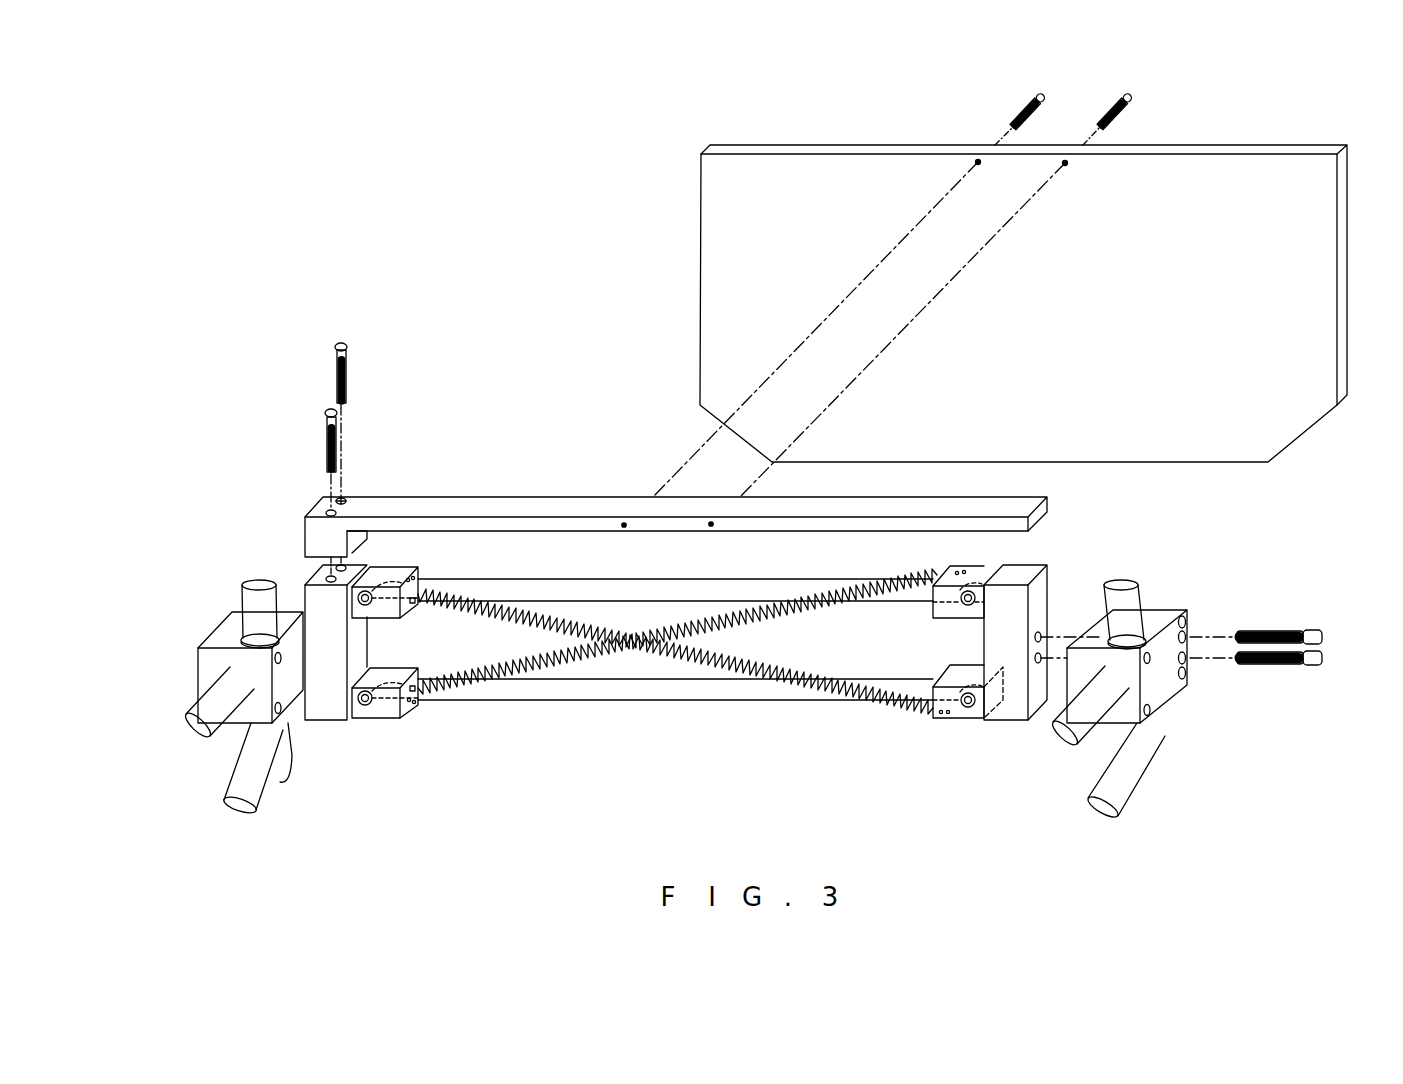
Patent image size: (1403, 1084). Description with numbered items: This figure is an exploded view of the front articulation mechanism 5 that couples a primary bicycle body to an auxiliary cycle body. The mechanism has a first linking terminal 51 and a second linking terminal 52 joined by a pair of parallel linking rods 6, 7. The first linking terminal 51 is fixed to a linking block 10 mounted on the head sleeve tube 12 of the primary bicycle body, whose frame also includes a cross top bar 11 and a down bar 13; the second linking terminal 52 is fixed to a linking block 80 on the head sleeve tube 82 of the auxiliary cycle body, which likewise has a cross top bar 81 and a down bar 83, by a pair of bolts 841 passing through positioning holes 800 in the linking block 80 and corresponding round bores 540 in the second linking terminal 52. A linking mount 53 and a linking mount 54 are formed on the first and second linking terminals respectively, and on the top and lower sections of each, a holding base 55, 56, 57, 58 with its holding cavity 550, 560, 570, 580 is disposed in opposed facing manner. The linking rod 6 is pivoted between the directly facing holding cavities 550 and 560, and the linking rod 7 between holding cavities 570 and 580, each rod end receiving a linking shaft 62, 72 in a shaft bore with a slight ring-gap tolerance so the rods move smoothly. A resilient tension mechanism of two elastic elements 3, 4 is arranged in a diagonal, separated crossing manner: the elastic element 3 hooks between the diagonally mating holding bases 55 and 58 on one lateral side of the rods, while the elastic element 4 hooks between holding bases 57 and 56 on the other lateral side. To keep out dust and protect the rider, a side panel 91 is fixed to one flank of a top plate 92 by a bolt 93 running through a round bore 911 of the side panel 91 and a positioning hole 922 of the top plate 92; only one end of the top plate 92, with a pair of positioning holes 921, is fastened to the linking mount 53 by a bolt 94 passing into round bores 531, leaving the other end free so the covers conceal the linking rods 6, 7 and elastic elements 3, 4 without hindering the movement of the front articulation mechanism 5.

The elastic element 3 is at (801, 698).
The elastic element 4 is at (748, 607).
The front articulation mechanism 5 is at (573, 730).
The linking rod 6 is at (660, 596).
The linking rod 7 is at (677, 695).
The linking block 10 is at (205, 660).
The cross top bar 11 is at (202, 736).
The head sleeve tube 12 is at (244, 580).
The down bar 13 is at (250, 792).
The first linking terminal 51 is at (307, 678).
The second linking terminal 52 is at (1001, 720).
The linking mount 53 is at (338, 705).
The linking mount 54 is at (1013, 606).
The holding base 55 is at (416, 571).
The holding base 56 is at (984, 568).
The holding base 57 is at (383, 717).
The holding base 58 is at (968, 714).
The linking shaft 62 is at (369, 605).
The linking shaft 72 is at (376, 705).
The linking block 80 is at (1160, 697).
The cross top bar 81 is at (1072, 728).
The head sleeve tube 82 is at (1127, 613).
The down bar 83 is at (1112, 812).
The side panel 91 is at (718, 230).
The top plate 92 is at (503, 513).
The bolt 93 is at (1136, 95).
The bolt 94 is at (336, 347).
The round bore 531 is at (328, 578).
The round bore 540 is at (1040, 633).
The holding cavity 550 is at (414, 612).
The holding cavity 560 is at (933, 605).
The holding cavity 570 is at (411, 710).
The holding cavity 580 is at (948, 674).
The positioning hole 800 is at (1190, 637).
The bolt 841 is at (1307, 632).
The round bore 911 is at (976, 161).
The positioning hole 921 is at (345, 500).
The positioning hole 922 is at (624, 527).